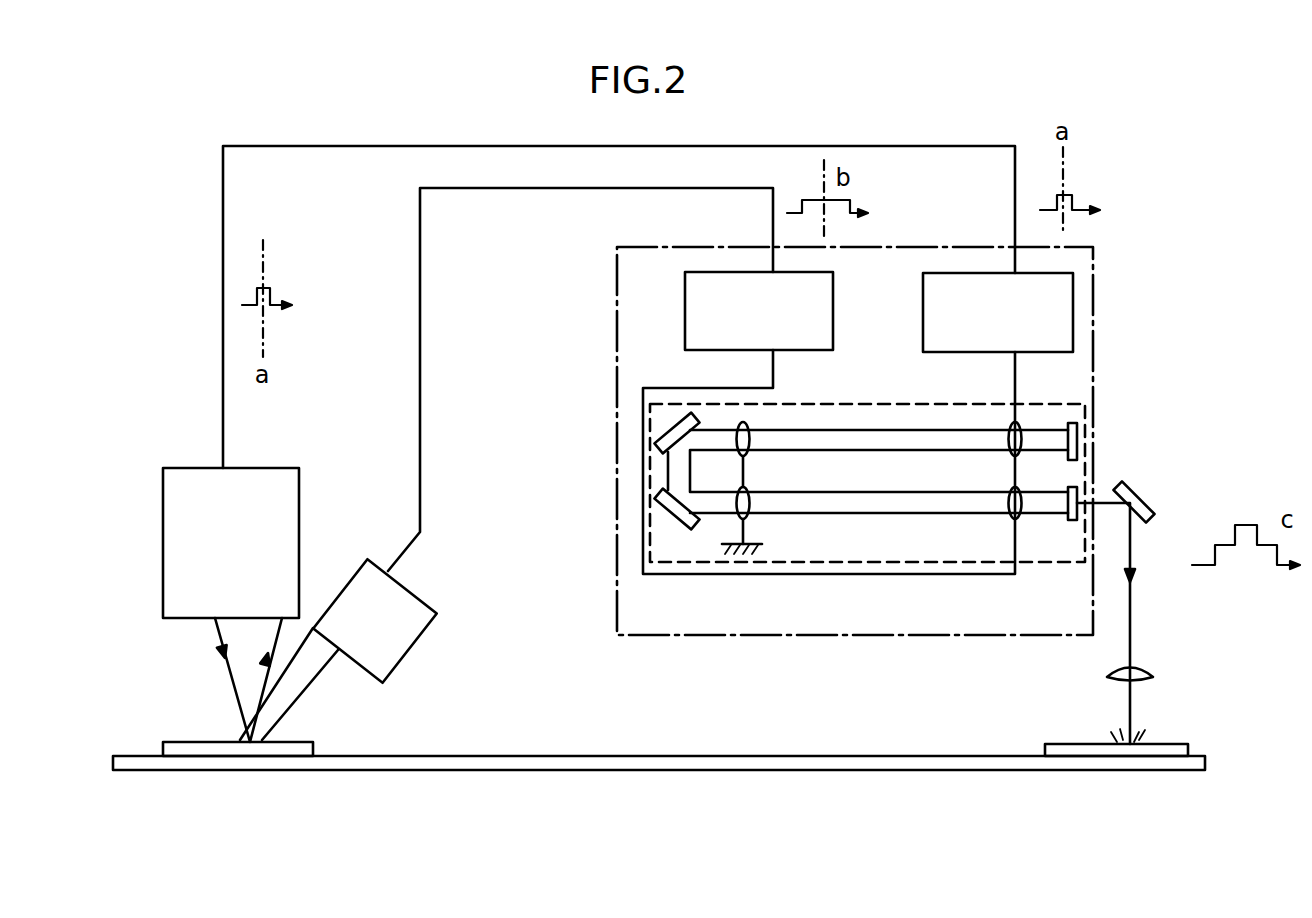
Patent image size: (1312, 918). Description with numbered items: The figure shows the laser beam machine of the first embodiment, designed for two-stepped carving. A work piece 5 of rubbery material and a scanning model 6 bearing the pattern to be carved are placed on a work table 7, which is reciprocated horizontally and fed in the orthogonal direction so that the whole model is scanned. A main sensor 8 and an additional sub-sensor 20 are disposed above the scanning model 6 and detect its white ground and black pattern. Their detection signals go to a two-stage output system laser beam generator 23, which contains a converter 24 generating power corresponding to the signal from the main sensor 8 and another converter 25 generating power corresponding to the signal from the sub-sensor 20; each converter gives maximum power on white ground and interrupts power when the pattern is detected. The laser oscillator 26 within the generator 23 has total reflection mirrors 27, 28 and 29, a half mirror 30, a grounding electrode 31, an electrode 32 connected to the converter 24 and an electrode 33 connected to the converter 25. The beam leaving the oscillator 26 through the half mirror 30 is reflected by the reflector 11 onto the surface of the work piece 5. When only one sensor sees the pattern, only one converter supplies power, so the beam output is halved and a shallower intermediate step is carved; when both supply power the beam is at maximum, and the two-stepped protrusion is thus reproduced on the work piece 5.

The work piece 5 is at (1085, 746).
The scanning model 6 is at (300, 747).
The work table 7 is at (797, 760).
The main sensor 8 is at (190, 475).
The reflector 11 is at (1145, 512).
The sub-sensor 20 is at (397, 645).
The two-stage output system laser beam generator 23 is at (1096, 255).
The converter 24 is at (995, 342).
The converter 25 is at (820, 340).
The laser oscillator 26 is at (1058, 405).
The total reflection mirror 27 is at (1077, 438).
The total reflection mirror 28 is at (673, 435).
The total reflection mirror 29 is at (672, 505).
The half mirror 30 is at (1085, 480).
The grounding electrode 31 is at (745, 462).
The electrode 32 is at (1010, 455).
The electrode 33 is at (1010, 503).